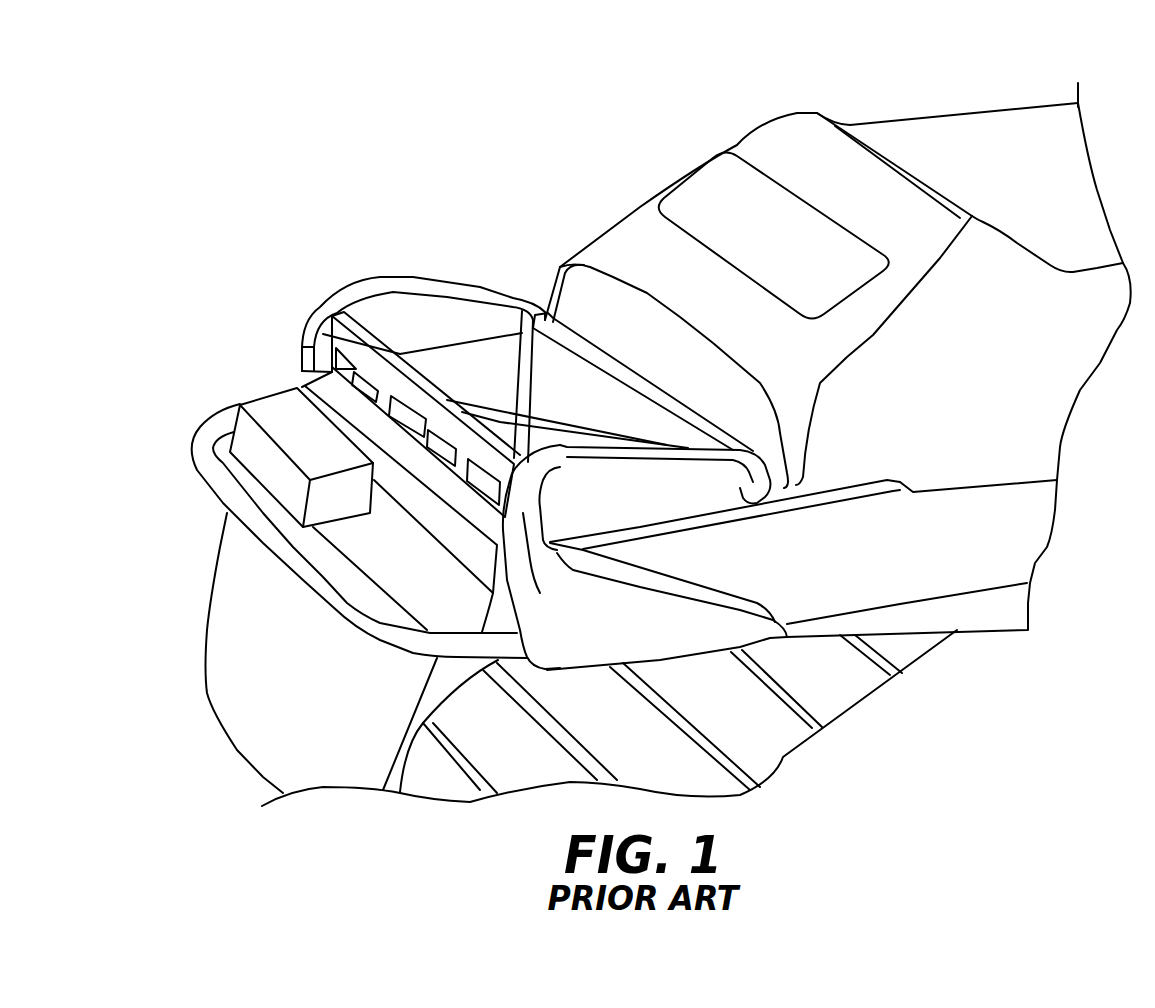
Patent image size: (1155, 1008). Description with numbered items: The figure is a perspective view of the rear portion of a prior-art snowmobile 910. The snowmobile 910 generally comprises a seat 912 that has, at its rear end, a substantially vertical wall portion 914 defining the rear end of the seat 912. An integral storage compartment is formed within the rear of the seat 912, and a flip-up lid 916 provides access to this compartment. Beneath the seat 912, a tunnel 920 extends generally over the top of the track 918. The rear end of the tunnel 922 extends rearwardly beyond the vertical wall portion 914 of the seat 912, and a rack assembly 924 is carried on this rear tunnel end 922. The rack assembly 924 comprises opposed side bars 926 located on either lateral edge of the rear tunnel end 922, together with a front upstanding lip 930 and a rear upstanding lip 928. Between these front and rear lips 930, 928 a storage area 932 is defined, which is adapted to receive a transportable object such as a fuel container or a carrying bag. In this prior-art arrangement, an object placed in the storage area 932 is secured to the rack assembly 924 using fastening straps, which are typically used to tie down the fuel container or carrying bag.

The snowmobile 910 is at (588, 122).
The seat 912 is at (950, 143).
The vertical wall portion 914 is at (577, 298).
The flip-up lid 916 is at (683, 200).
The track 918 is at (777, 743).
The tunnel 920 is at (868, 577).
The rear end of the tunnel 922 is at (800, 480).
The rack assembly 924 is at (395, 258).
The side bars 926 is at (360, 285).
The rear upstanding lip 928 is at (303, 347).
The front upstanding lip 930 is at (635, 390).
The storage area 932 is at (533, 407).